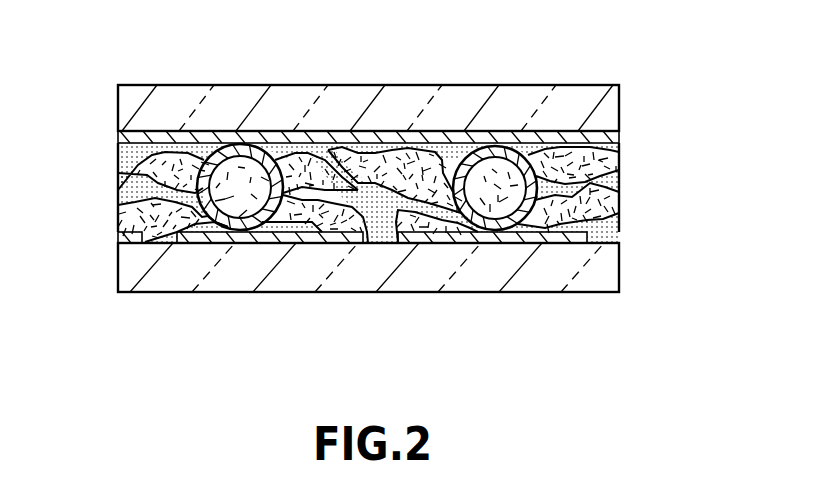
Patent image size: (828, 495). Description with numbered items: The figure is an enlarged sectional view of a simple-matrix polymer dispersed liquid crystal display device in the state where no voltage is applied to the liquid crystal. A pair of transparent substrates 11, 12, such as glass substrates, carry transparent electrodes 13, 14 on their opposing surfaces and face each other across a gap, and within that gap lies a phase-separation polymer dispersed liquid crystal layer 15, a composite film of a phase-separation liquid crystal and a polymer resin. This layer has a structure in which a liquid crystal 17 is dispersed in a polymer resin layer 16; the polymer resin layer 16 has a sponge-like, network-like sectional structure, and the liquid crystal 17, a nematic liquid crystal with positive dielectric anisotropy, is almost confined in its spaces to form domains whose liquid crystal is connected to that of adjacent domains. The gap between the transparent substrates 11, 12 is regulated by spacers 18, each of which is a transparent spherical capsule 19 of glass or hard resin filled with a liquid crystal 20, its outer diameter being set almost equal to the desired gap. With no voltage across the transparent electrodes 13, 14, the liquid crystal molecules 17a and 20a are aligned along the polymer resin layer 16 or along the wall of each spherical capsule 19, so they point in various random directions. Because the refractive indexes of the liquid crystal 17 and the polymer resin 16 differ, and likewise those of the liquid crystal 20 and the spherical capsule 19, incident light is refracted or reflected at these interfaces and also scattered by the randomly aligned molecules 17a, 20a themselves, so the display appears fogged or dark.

The transparent substrate 11 is at (603, 103).
The transparent substrate 12 is at (602, 272).
The transparent electrode 13 is at (522, 140).
The transparent electrode 14 is at (577, 243).
The phase-separation polymer dispersed liquid crystal layer 15 is at (605, 188).
The polymer resin layer 16 is at (610, 163).
The liquid crystal 17 is at (432, 158).
The liquid crystal molecules 17a is at (376, 165).
The spacer 18 is at (197, 174).
The spherical capsule 19 is at (233, 231).
The liquid crystal 20 is at (206, 148).
The liquid crystal molecules 20a is at (280, 146).